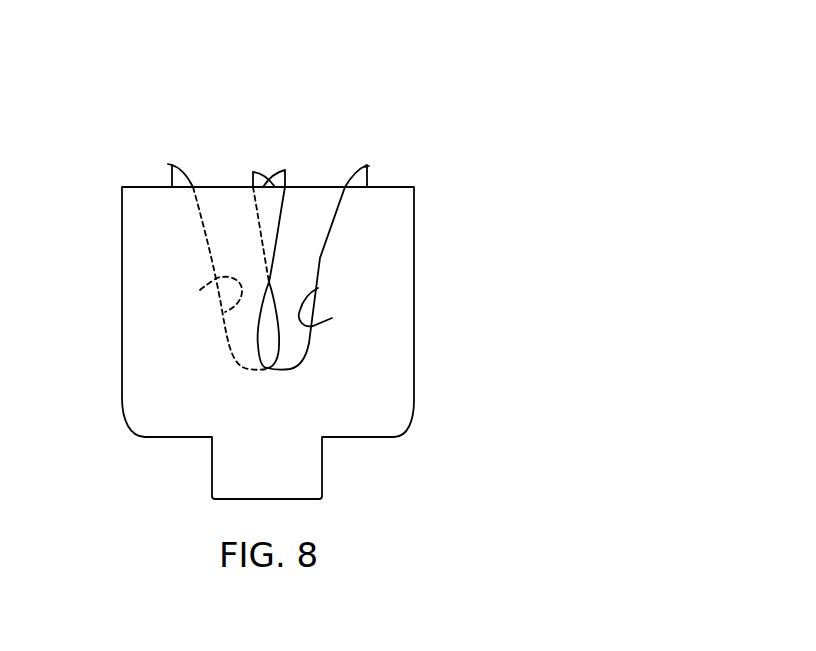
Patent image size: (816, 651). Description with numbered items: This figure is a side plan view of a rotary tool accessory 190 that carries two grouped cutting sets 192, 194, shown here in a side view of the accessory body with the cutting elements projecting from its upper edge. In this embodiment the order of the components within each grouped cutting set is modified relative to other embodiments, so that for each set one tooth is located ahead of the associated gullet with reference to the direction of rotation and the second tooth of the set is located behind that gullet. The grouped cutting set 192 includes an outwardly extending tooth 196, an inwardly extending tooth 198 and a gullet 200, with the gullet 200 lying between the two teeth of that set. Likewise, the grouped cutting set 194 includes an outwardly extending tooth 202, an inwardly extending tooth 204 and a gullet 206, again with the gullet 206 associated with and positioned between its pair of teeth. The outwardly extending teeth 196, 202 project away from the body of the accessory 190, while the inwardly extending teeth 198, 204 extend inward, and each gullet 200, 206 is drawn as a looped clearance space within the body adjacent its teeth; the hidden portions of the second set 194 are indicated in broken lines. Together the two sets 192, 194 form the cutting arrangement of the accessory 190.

The accessory 190 is at (398, 86).
The grouped cutting set 192 is at (386, 146).
The grouped cutting set 194 is at (189, 145).
The outwardly extending tooth 196 is at (285, 170).
The inwardly extending tooth 198 is at (365, 167).
The gullet 200 is at (332, 318).
The outwardly extending tooth 202 is at (254, 170).
The inwardly extending tooth 204 is at (170, 165).
The gullet 206 is at (200, 290).